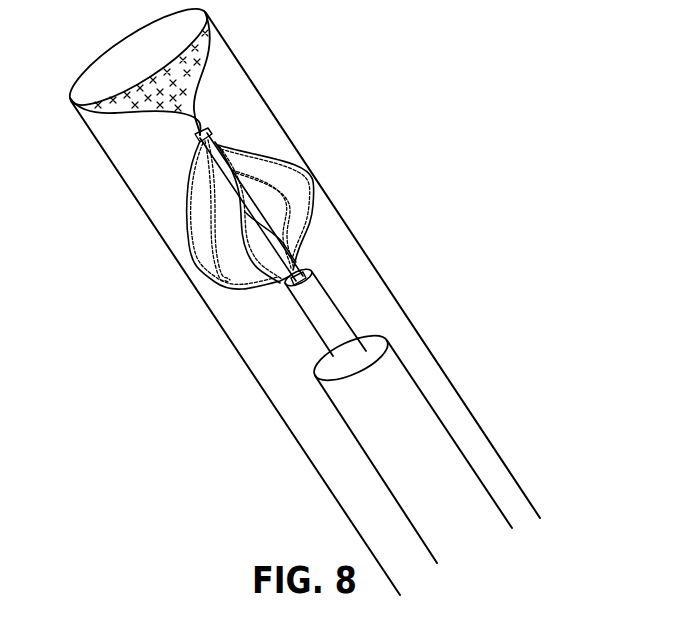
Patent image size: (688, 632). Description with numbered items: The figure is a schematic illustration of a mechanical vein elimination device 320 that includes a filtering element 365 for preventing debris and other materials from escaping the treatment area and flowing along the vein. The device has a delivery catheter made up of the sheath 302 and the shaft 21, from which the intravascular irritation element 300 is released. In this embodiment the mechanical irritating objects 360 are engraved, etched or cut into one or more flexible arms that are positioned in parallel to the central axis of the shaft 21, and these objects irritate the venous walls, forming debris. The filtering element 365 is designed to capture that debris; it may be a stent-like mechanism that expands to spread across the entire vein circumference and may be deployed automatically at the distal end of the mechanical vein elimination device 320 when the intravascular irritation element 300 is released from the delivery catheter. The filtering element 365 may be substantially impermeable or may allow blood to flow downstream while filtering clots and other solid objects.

The shaft 21 is at (318, 321).
The intravascular irritation element 300 is at (194, 228).
The sheath 302 is at (427, 397).
The mechanical vein elimination device 320 is at (444, 280).
The mechanical irritating objects 360 is at (243, 155).
The filtering element 365 is at (212, 43).